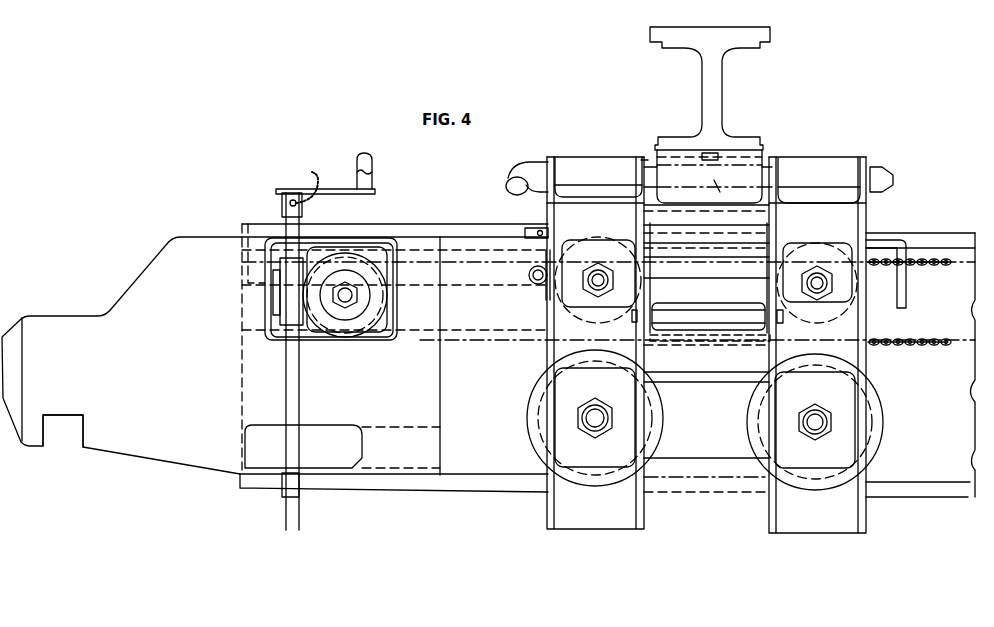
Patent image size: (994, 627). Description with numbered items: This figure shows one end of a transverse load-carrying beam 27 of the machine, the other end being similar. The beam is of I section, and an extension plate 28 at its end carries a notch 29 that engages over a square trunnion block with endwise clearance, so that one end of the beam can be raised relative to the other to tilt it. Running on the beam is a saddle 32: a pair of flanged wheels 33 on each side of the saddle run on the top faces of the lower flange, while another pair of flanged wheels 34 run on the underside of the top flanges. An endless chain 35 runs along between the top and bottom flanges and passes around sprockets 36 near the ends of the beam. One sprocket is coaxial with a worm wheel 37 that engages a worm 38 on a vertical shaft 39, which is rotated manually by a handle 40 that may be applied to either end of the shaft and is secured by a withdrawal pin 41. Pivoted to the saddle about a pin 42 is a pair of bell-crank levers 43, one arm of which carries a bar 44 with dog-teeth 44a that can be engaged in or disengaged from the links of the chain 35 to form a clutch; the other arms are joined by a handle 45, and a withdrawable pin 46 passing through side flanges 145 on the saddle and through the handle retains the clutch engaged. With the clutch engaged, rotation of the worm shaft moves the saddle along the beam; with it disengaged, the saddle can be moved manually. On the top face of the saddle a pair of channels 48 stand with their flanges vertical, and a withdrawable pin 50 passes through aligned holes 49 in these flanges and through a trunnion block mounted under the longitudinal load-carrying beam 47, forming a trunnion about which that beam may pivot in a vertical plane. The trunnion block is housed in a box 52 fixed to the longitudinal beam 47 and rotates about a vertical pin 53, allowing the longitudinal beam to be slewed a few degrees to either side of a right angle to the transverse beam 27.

The transverse load-carrying beam 27 is at (922, 237).
The extension plate 28 is at (77, 323).
The notch 29 is at (65, 438).
The saddle 32 is at (550, 352).
The flanged wheel 33 is at (528, 428).
The flanged wheel 34 is at (557, 307).
The endless chain 35 is at (932, 267).
The sprocket 36 is at (385, 300).
The worm wheel 37 is at (332, 332).
The worm 38 is at (290, 293).
The vertical shaft 39 is at (288, 385).
The handle 40 is at (334, 189).
The withdrawal pin 41 is at (282, 201).
The pin 42 is at (717, 318).
The bell-crank lever 43 is at (650, 285).
The bar 44 is at (684, 307).
The dog-teeth 44a is at (687, 342).
The handle 45 is at (719, 250).
The withdrawable pin 46 is at (880, 237).
The longitudinal load-carrying beam 47 is at (742, 37).
The channel 48 is at (551, 157).
The aligned hole 49 is at (643, 158).
The withdrawable pin 50 is at (815, 175).
The box 52 is at (748, 188).
The vertical pin 53 is at (708, 157).
The side flange 145 is at (555, 218).